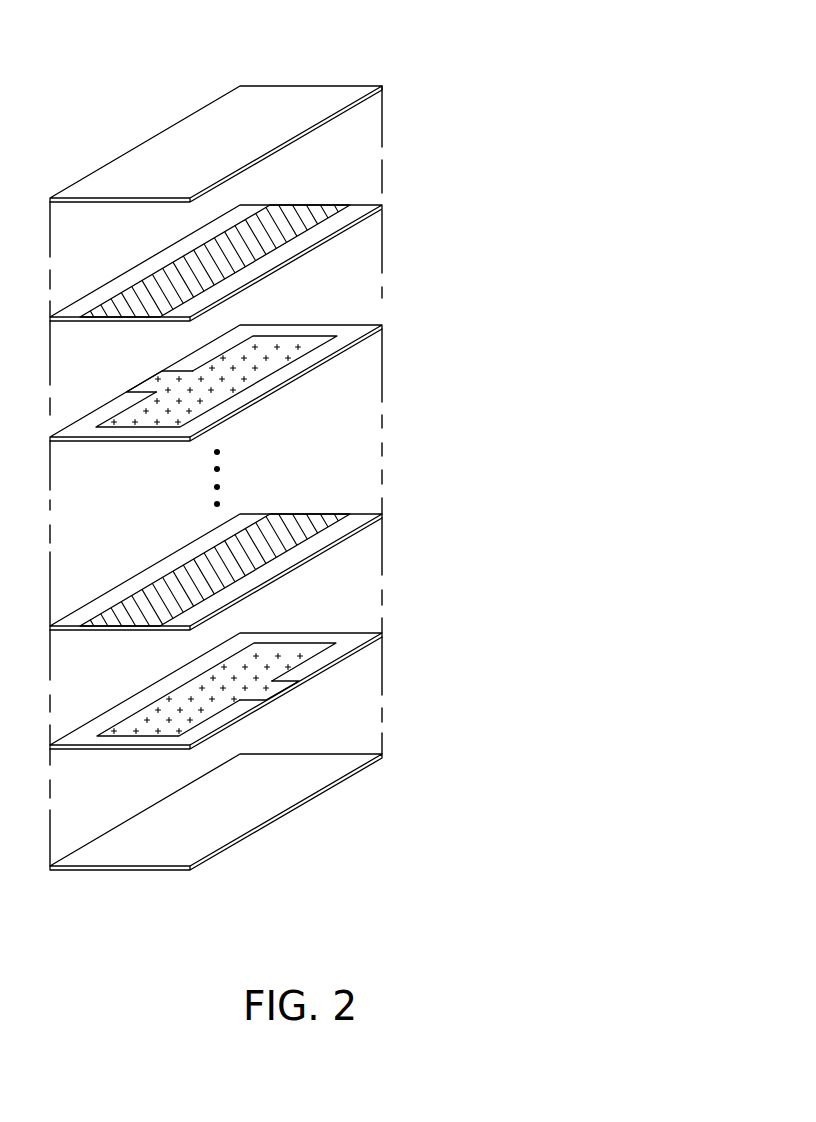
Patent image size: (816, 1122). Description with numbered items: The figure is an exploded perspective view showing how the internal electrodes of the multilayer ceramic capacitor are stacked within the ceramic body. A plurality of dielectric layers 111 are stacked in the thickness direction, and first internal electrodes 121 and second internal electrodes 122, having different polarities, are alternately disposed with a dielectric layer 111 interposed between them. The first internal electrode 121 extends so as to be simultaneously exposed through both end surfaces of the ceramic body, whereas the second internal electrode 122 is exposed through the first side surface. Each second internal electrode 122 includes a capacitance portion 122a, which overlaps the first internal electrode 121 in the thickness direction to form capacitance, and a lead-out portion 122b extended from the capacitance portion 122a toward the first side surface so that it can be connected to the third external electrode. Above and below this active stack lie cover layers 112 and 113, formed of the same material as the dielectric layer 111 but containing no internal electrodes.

The cover layer 112 is at (287, 97).
The first internal electrode 121 is at (288, 215).
The dielectric layer 111 is at (276, 262).
The second internal electrode 122 is at (326, 536).
The capacitance portion 122a is at (193, 408).
The lead-out portion 122b is at (173, 378).
The cover layer 113 is at (287, 766).